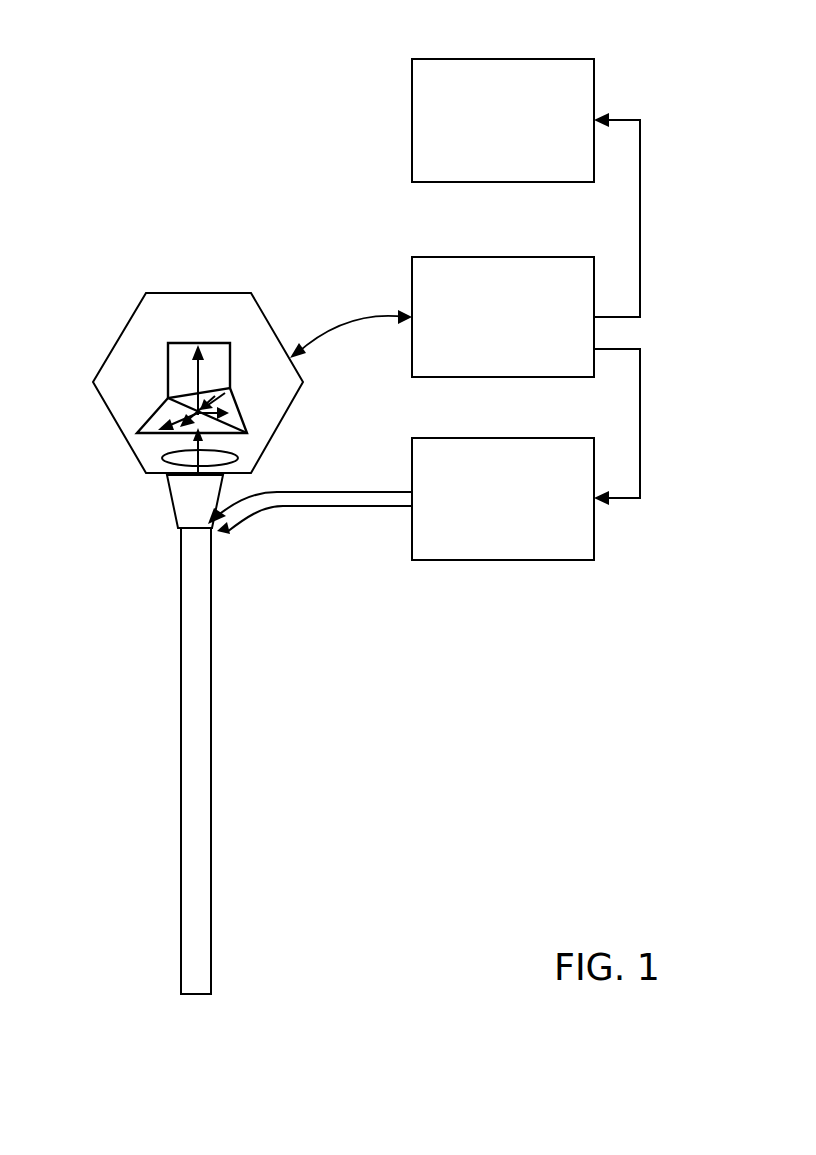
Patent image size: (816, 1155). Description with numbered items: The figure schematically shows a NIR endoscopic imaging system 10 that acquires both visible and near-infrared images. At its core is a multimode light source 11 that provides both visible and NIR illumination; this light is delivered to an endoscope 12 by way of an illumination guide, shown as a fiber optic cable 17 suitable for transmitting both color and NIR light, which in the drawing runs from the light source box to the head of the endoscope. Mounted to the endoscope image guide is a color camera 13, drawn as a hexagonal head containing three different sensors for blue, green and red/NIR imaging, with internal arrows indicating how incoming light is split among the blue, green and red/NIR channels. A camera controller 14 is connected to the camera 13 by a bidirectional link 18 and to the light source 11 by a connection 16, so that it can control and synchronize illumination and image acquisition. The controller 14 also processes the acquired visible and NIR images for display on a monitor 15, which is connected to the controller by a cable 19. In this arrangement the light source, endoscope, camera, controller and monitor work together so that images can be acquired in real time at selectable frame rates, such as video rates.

The NIR endoscopic imaging system 10 is at (498, 766).
The multimode light source 11 is at (594, 543).
The endoscope 12 is at (211, 665).
The color camera 13 is at (130, 318).
The camera controller 14 is at (440, 257).
The monitor 15 is at (572, 59).
The controller to light source connection 16 is at (640, 420).
The fiber optic cable 17 is at (290, 507).
The bidirectional data connection 18 is at (350, 323).
The cable 19 is at (640, 223).